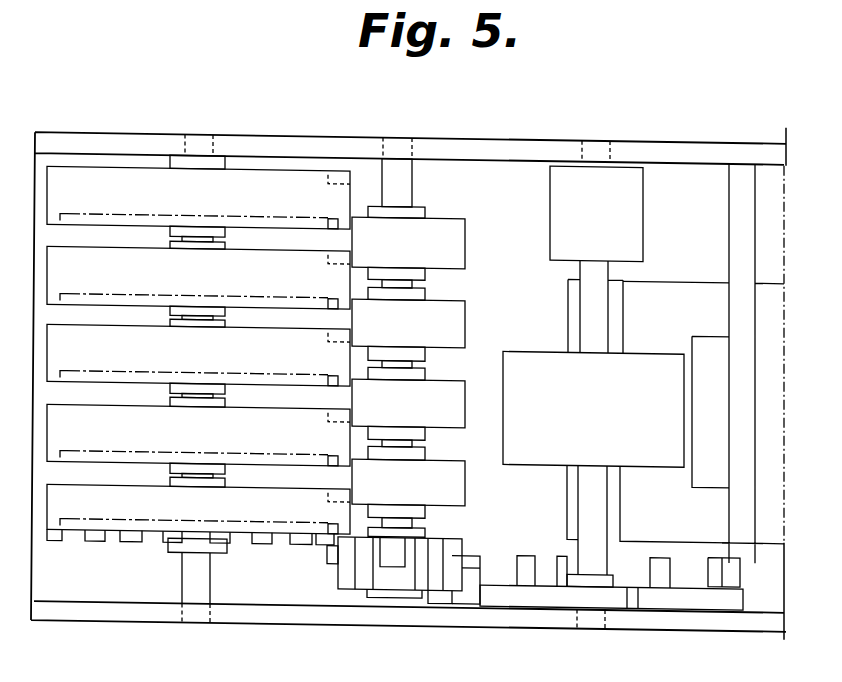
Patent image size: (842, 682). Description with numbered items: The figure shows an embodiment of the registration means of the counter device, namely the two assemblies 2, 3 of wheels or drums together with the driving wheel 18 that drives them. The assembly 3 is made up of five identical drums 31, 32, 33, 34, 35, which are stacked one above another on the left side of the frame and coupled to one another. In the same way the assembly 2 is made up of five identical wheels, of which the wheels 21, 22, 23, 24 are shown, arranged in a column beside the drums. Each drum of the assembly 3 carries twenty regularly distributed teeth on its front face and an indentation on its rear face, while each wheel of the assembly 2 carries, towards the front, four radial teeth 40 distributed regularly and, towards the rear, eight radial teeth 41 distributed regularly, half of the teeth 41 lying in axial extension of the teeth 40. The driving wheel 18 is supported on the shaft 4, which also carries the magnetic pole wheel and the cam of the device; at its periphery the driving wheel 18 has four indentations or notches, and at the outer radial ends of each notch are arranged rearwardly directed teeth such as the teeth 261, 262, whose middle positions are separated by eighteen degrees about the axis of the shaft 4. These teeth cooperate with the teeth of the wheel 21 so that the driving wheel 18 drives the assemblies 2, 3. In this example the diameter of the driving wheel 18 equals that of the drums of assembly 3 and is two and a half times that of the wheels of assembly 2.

The assembly of wheels 2 is at (371, 605).
The assembly of drums 3 is at (173, 563).
The shaft 4 is at (593, 307).
The driving wheel 18 is at (556, 600).
The wheel 21 is at (348, 568).
The wheel 22 is at (410, 494).
The wheel 23 is at (410, 415).
The wheel 24 is at (410, 335).
The drum 31 is at (214, 524).
The drum 32 is at (214, 444).
The drum 33 is at (214, 364).
The drum 34 is at (214, 286).
The drum 35 is at (214, 206).
The radial teeth 40 is at (425, 582).
The radial teeth 41 is at (393, 546).
The tooth 261 is at (462, 552).
The tooth 262 is at (466, 576).